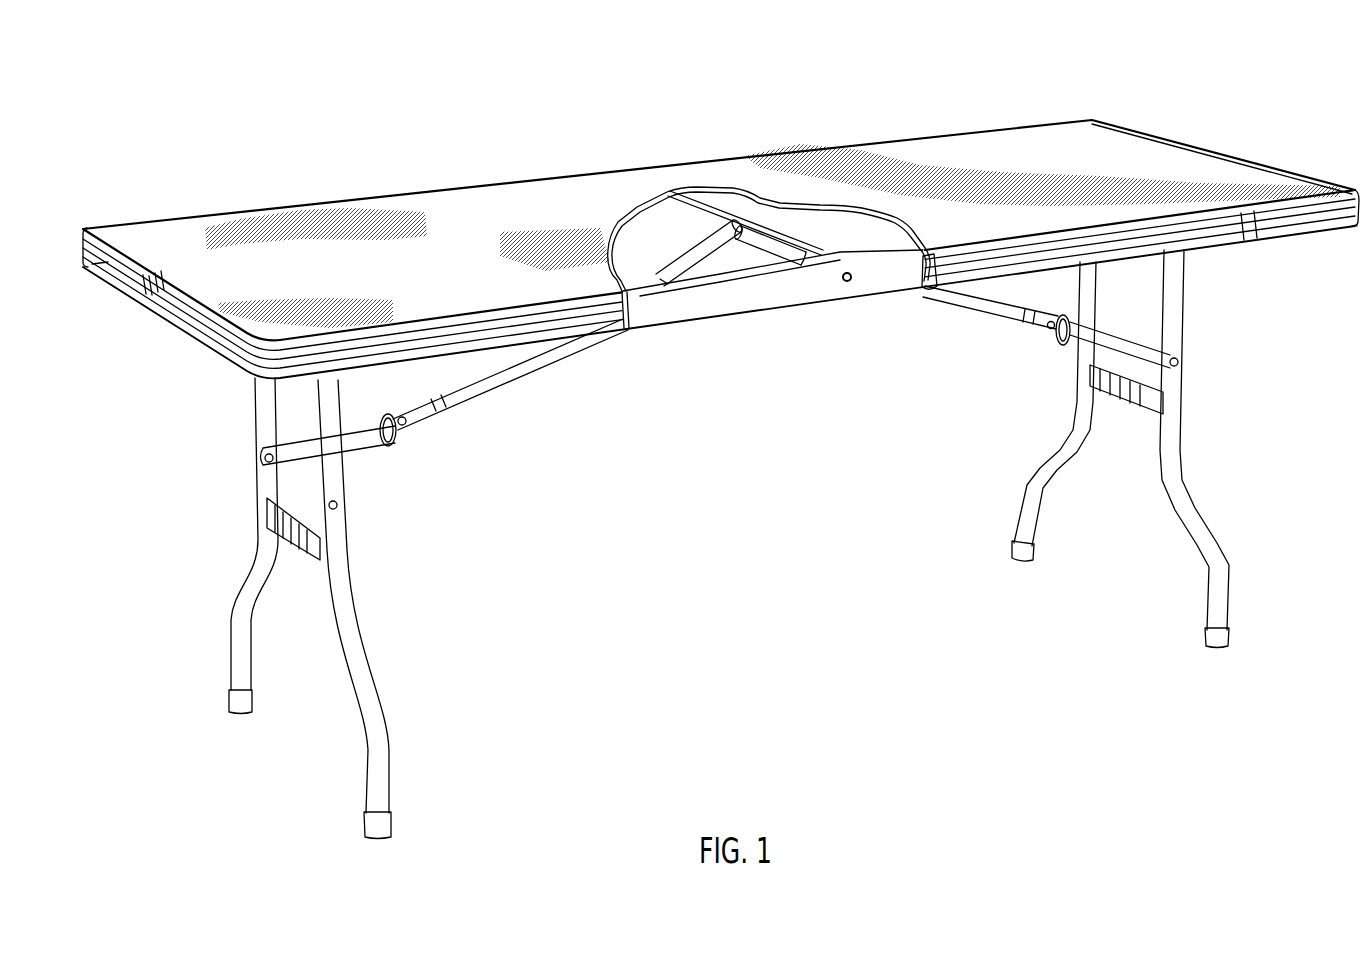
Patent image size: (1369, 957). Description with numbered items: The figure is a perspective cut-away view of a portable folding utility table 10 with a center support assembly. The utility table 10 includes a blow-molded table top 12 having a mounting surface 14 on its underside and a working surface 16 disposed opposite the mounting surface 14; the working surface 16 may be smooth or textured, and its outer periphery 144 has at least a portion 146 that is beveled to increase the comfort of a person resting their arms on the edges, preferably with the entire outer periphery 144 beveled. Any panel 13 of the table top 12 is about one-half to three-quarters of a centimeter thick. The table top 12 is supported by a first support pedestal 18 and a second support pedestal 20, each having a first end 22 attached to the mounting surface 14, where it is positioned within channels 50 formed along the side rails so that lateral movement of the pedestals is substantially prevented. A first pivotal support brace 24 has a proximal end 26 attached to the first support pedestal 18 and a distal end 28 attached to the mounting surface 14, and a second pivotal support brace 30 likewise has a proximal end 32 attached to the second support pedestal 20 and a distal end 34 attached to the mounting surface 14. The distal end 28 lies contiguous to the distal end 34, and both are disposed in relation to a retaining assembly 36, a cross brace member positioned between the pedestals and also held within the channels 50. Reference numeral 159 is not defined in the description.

The utility table 10 is at (339, 174).
The table top 12 is at (1167, 128).
The panel 13 is at (786, 198).
The mounting surface 14 is at (880, 220).
The working surface 16 is at (981, 236).
The first support pedestal 18 is at (354, 606).
The second support pedestal 20 is at (1209, 503).
The first end 22 is at (262, 407).
The first pivotal support brace 24 is at (486, 387).
The proximal end 26 is at (390, 440).
The distal end 28 is at (700, 251).
The second pivotal support brace 30 is at (966, 309).
The proximal end 32 is at (1085, 335).
The distal end 34 is at (783, 235).
The retaining assembly 36 is at (774, 248).
The channel 50 is at (913, 270).
The outer periphery 144 is at (1362, 230).
The beveled portion 146 is at (1355, 188).
The end portion of table top 159 is at (86, 262).